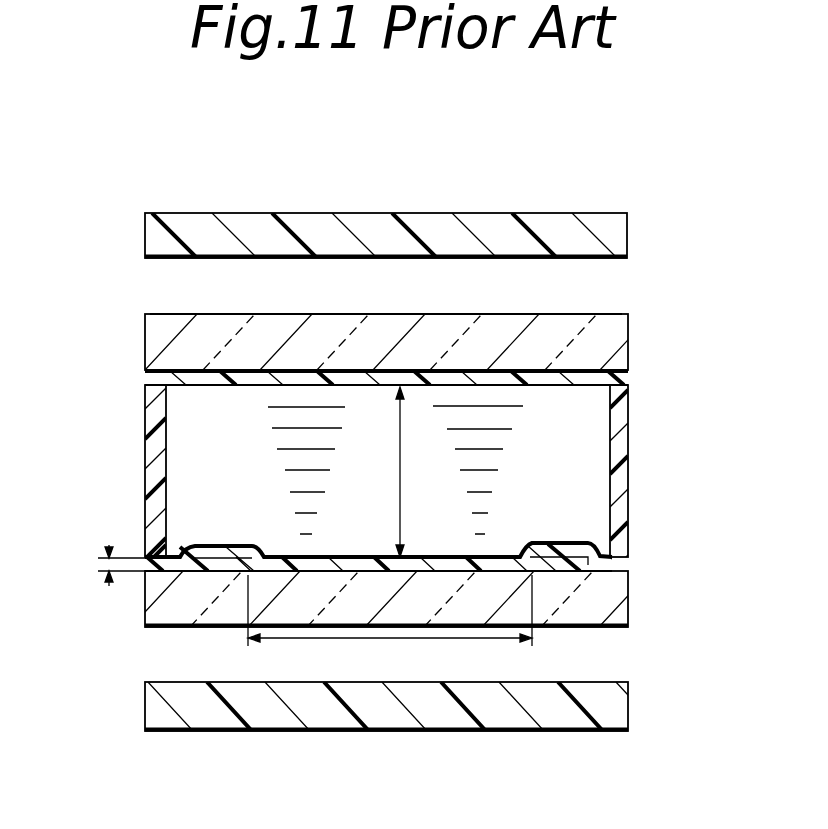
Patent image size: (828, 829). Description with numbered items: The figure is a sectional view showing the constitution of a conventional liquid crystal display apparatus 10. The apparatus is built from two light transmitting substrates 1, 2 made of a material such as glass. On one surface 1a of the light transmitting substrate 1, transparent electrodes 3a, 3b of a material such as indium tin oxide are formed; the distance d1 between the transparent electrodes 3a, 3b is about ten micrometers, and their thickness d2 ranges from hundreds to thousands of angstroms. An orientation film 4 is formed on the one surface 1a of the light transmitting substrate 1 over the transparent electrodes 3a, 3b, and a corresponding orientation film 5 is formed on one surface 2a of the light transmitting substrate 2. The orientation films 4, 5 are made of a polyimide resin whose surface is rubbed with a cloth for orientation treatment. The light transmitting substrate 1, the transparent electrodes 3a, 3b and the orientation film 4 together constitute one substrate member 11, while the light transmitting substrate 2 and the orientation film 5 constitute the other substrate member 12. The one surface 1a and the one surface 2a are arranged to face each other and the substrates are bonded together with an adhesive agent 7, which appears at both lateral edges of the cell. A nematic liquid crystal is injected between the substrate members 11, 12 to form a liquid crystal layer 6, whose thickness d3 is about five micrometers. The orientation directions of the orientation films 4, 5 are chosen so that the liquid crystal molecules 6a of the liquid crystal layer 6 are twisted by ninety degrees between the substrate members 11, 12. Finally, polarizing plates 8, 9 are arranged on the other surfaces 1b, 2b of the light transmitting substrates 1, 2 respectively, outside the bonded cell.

The light transmitting substrate 1 is at (612, 585).
The one surface of the light transmitting substrate 1a is at (277, 557).
The other surface of the light transmitting substrate 1b is at (598, 628).
The light transmitting substrate 2 is at (616, 340).
The one surface of the light transmitting substrate 2a is at (214, 385).
The other surface of the light transmitting substrate 2b is at (208, 316).
The transparent electrode 3a is at (198, 553).
The transparent electrode 3b is at (586, 545).
The orientation film 4 is at (616, 557).
The orientation film 5 is at (412, 372).
The liquid crystal layer 6 is at (422, 471).
The liquid crystal molecules 6a is at (322, 468).
The adhesive agent 7 is at (150, 450).
The polarizing plate 8 is at (617, 704).
The polarizing plate 9 is at (611, 234).
The liquid crystal display apparatus 10 is at (475, 170).
The one substrate member 11 is at (396, 586).
The other substrate member 12 is at (433, 357).
The distance between the transparent electrodes d1 is at (390, 631).
The thickness of the transparent electrodes d2 is at (107, 560).
The thickness of the liquid crystal layer d3 is at (394, 497).